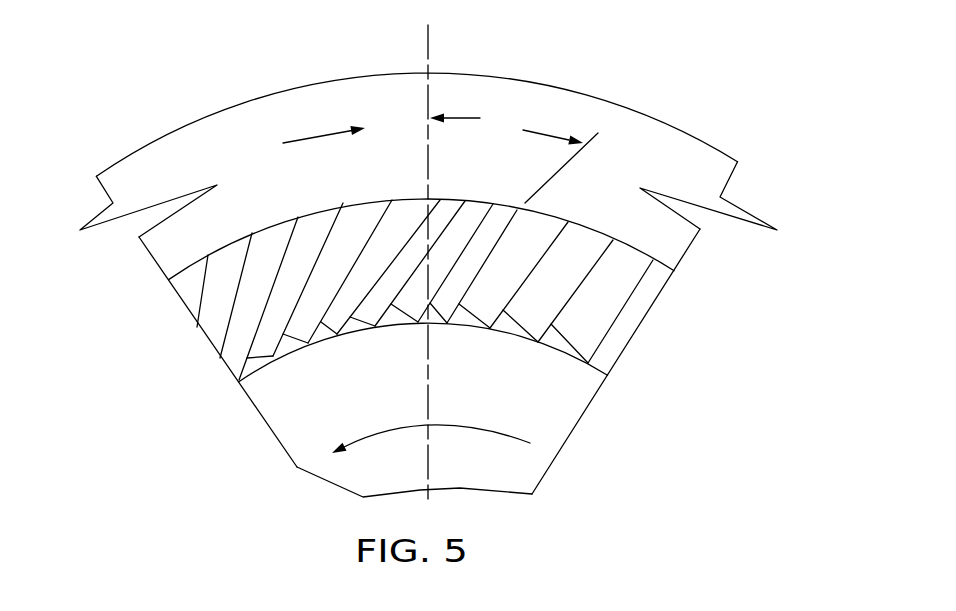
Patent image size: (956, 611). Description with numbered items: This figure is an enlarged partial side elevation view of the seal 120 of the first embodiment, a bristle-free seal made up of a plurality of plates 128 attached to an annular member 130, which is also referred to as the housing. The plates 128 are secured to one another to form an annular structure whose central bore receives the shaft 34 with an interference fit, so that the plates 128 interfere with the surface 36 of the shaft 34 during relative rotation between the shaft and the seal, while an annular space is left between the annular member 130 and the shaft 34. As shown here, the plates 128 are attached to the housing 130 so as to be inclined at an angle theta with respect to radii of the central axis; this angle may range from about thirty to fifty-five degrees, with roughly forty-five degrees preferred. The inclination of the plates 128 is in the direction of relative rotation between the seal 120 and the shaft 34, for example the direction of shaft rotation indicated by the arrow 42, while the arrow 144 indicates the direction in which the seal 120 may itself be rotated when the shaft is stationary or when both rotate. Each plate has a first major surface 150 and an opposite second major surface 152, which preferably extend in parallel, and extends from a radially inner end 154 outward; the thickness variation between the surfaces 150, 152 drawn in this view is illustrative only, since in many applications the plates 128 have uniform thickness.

The seal 120 is at (519, 62).
The annular member 130 is at (662, 141).
The arrow 144 is at (312, 137).
The first major surface 150 is at (462, 228).
The second major surface 152 is at (510, 228).
The plates 128 is at (454, 267).
The radially inner end 154 is at (400, 325).
The surface 36 is at (555, 326).
The shaft 34 is at (552, 418).
The arrow 42 is at (450, 432).